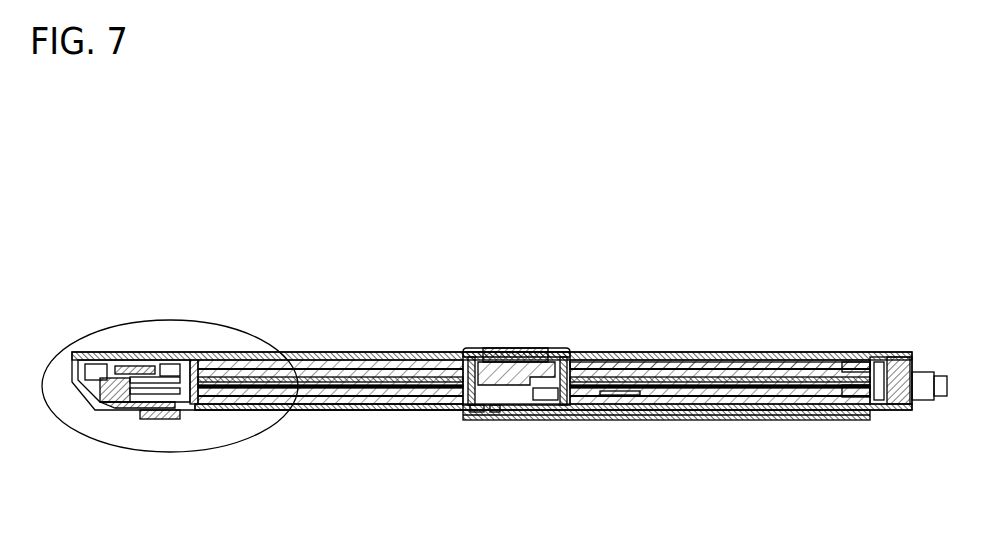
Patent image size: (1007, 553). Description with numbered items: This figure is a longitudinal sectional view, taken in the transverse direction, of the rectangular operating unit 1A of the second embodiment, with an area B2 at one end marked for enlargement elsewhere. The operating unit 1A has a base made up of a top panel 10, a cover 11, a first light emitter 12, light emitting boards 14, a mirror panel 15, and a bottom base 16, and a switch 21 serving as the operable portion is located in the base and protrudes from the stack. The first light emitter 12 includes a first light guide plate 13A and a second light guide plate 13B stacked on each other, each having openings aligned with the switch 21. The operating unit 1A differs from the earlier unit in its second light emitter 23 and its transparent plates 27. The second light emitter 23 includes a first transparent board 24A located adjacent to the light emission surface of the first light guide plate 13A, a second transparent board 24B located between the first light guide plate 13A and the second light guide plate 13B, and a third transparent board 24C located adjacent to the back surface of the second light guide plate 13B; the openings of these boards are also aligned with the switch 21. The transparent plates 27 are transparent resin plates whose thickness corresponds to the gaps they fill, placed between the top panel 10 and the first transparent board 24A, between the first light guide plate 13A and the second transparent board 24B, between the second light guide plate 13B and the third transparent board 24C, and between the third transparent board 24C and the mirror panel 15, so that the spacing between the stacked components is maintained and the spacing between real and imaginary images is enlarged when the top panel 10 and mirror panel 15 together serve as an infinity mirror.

The operating unit 1A is at (836, 262).
The top panel 10 is at (427, 352).
The cover 11 is at (109, 352).
The first light emitter 12 is at (392, 295).
The first light guide plate 13A is at (302, 352).
The second light guide plate 13B is at (362, 352).
The light emitting boards 14 is at (216, 360).
The mirror panel 15 is at (401, 412).
The bottom base 16 is at (348, 412).
The switch 21 is at (519, 348).
The second light emitter 23 is at (750, 297).
The first transparent board 24A is at (607, 352).
The second transparent board 24B is at (667, 352).
The third transparent board 24C is at (723, 352).
The transparent plates 27 is at (637, 373).
The area B2 is at (171, 320).